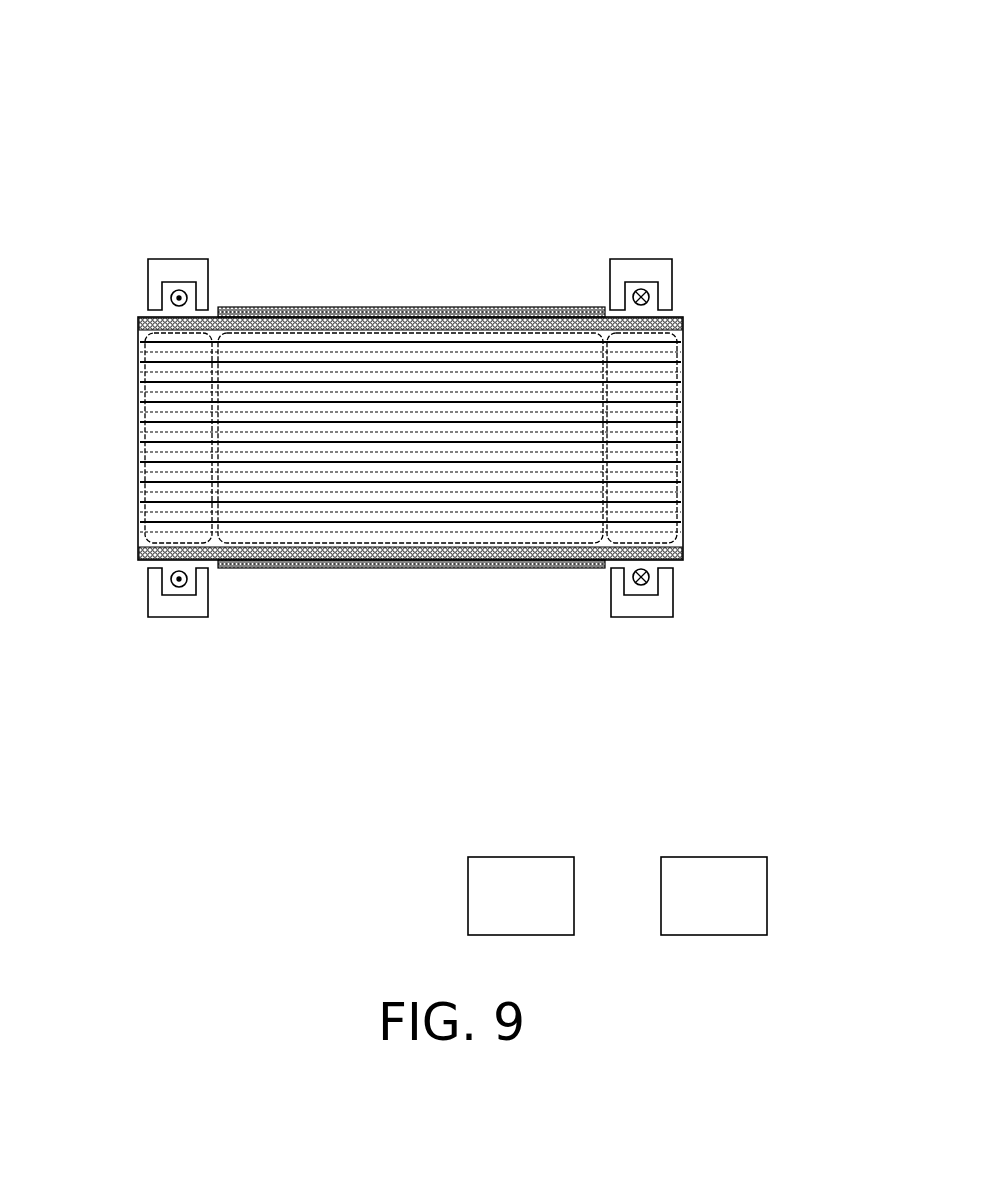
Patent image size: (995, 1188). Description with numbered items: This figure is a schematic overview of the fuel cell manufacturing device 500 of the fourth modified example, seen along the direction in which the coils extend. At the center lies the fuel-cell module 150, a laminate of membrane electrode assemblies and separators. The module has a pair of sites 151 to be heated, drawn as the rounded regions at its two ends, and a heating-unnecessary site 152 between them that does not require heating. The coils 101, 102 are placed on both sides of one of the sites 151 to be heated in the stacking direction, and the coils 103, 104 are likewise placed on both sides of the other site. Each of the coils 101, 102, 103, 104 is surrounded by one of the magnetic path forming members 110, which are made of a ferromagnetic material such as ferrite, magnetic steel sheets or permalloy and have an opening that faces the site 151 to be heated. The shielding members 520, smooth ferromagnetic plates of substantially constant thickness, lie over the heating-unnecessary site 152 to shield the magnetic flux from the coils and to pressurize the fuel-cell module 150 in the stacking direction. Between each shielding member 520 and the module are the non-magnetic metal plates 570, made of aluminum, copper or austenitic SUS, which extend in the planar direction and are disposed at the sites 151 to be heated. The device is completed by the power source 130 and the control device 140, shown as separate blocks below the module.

The fuel cell manufacturing device 500 is at (86, 59).
The fuel-cell module 150 is at (128, 378).
The site to be heated 151 is at (140, 452).
The heating-unnecessary site 152 is at (453, 310).
The non-magnetic metal plate 570 is at (137, 322).
The shielding member 520 is at (338, 306).
The magnetic path forming member 110 is at (182, 266).
The coil 101 is at (171, 293).
The coil 102 is at (170, 586).
The coil 103 is at (649, 292).
The coil 104 is at (650, 582).
The power source 130 is at (512, 870).
The control device 140 is at (710, 870).